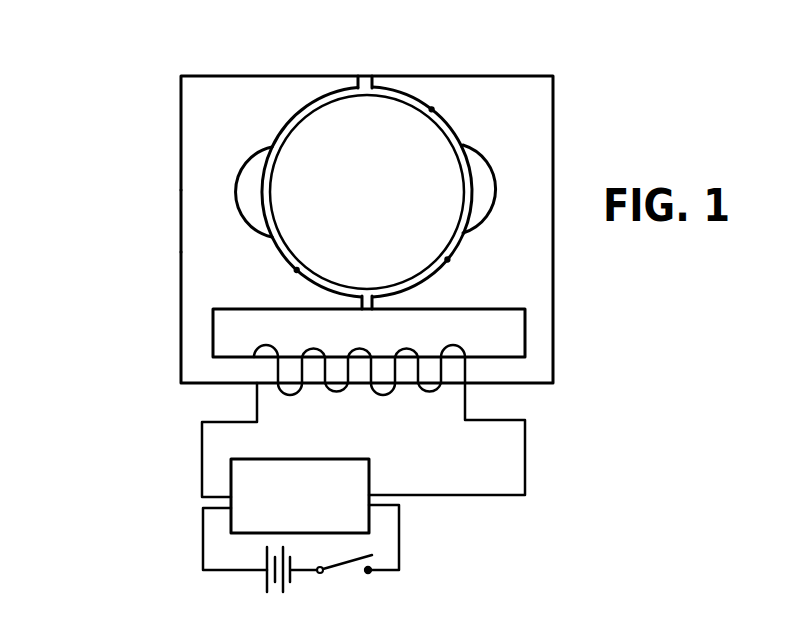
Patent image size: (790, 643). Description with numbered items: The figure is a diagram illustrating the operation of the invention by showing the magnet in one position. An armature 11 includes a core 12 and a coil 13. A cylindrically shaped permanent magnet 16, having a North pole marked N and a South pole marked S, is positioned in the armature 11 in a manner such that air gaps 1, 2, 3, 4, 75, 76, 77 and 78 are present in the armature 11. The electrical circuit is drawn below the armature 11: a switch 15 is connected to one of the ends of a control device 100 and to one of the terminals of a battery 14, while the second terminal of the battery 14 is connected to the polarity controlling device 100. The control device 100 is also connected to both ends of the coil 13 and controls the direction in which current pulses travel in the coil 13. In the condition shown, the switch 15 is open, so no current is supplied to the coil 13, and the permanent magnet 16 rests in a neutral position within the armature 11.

The air gap 1 is at (307, 108).
The air gap 2 is at (448, 126).
The air gap 3 is at (446, 258).
The air gap 4 is at (298, 268).
The armature 11 is at (182, 253).
The core 12 is at (193, 190).
The coil 13 is at (430, 394).
The battery 14 is at (267, 588).
The switch 15 is at (348, 565).
The permanent magnet 16 is at (392, 153).
The air gap 75 is at (362, 76).
The air gap 76 is at (368, 309).
The air gap 77 is at (246, 196).
The air gap 78 is at (482, 202).
The control device 100 is at (210, 502).